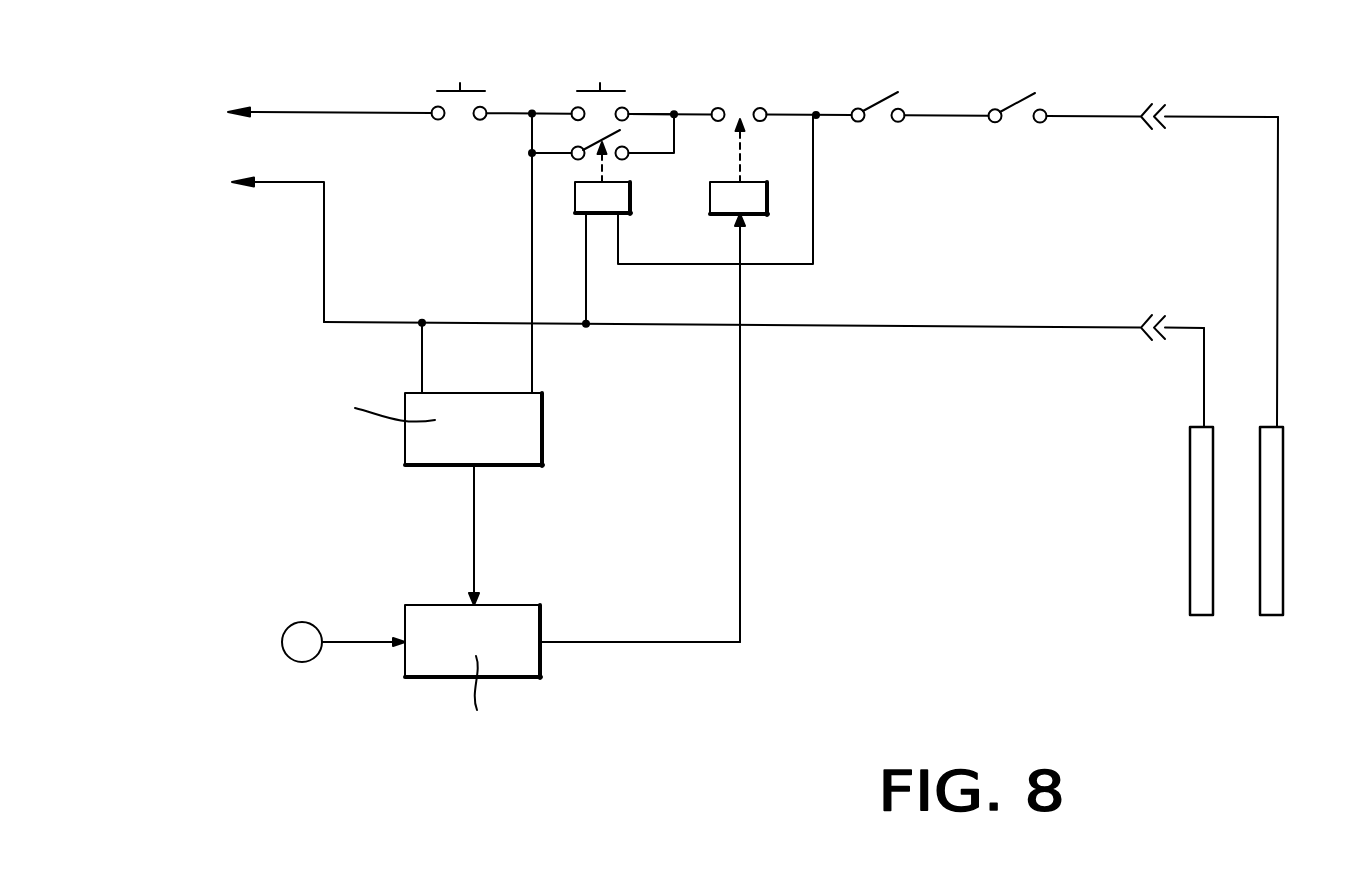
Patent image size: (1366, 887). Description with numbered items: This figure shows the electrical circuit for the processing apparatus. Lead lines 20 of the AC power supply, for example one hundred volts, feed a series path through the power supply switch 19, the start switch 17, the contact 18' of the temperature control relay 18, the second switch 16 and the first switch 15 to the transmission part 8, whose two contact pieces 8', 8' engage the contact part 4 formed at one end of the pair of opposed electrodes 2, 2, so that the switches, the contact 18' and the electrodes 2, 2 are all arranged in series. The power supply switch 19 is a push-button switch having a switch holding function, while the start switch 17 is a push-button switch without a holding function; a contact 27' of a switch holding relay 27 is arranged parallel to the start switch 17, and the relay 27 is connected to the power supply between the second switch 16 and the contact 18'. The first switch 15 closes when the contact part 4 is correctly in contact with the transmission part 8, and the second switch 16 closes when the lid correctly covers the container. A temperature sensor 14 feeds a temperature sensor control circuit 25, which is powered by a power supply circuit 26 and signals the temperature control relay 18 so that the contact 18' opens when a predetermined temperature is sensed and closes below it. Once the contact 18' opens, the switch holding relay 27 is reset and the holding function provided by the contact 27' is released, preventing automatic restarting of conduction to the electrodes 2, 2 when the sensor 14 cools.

The electrodes 2 is at (1190, 475).
The contact part 4 is at (1172, 106).
The transmission part 8 is at (1159, 171).
The contact pieces 8' is at (1130, 189).
The temperature sensor 14 is at (300, 621).
The first switch 15 is at (1011, 95).
The second switch 16 is at (872, 95).
The start switch 17 is at (598, 83).
The temperature control relay 18 is at (757, 219).
The contact of temperature control relay 18' is at (739, 103).
The power supply switch 19 is at (459, 83).
The lead lines of AC power supply 20 is at (268, 112).
The temperature sensor control circuit 25 is at (515, 605).
The power supply circuit 26 is at (544, 432).
The switch holding relay 27 is at (694, 219).
The contact of switch holding relay 27' is at (547, 165).